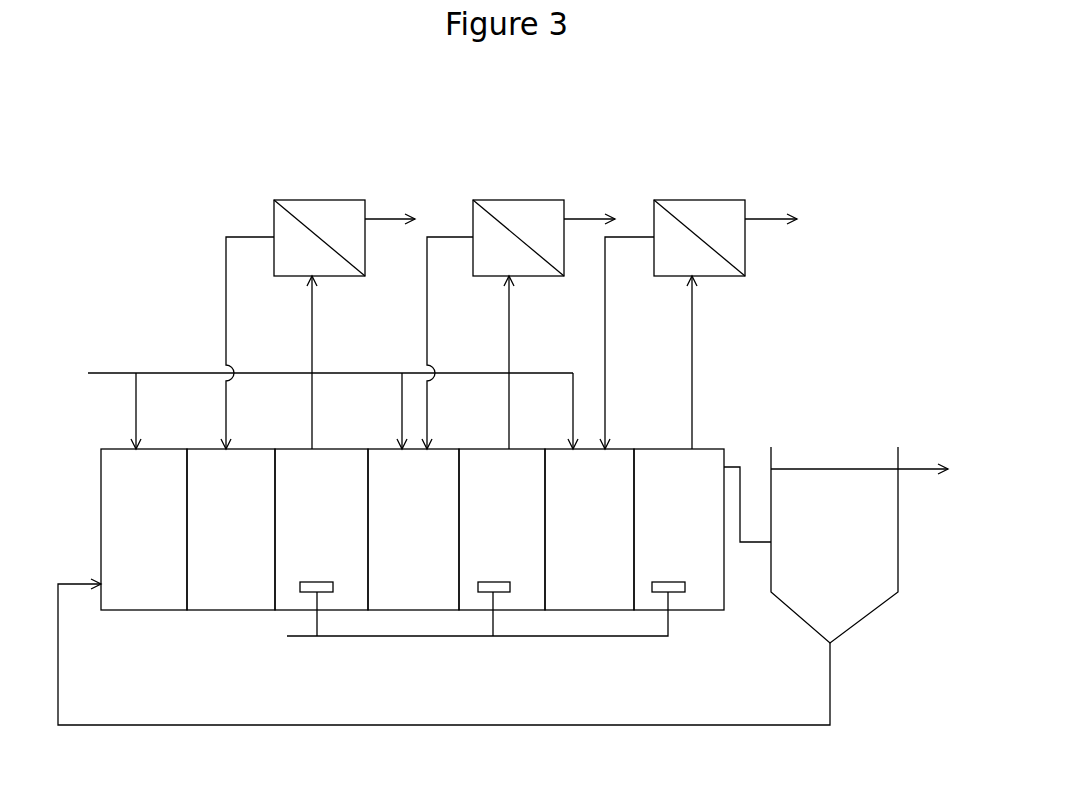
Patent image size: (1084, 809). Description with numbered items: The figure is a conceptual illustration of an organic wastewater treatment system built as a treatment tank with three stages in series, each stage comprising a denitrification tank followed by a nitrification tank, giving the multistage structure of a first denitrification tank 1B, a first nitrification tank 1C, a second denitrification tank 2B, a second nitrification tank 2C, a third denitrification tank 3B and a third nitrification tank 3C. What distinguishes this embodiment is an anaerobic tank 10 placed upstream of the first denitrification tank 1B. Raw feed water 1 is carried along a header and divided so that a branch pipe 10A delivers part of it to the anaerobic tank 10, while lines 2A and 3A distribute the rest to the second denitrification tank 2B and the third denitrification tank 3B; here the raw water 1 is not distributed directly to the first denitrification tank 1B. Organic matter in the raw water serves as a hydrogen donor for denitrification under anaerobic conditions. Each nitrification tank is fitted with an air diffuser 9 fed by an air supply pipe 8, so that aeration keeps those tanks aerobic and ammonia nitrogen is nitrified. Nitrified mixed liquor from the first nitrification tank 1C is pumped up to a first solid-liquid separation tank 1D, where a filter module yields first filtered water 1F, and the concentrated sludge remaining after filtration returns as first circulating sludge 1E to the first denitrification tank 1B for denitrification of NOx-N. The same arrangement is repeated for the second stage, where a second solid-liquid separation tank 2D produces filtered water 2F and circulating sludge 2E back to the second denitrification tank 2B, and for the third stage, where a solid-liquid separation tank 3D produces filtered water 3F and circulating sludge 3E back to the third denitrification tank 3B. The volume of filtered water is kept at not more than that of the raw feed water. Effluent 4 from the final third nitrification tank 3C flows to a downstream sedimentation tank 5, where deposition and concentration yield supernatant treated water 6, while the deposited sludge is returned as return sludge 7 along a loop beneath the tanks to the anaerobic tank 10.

The raw feed water 1 is at (109, 372).
The anaerobic tank 10 is at (140, 610).
The branch pipe 10A is at (137, 418).
The first denitrification tank 1B is at (212, 610).
The first nitrification tank 1C is at (340, 610).
The first solid-liquid separation tank 1D is at (309, 200).
The first circulating sludge 1E is at (226, 279).
The first filtered water 1F is at (385, 219).
The raw water line 2A is at (401, 418).
The second denitrification tank 2B is at (413, 610).
The second nitrification tank 2C is at (515, 610).
The second solid-liquid separation tank 2D is at (511, 200).
The circulating sludge 2E is at (427, 319).
The filtered water 2F is at (585, 219).
The raw water line 3A is at (572, 418).
The third denitrification tank 3B is at (582, 610).
The third nitrification tank 3C is at (693, 610).
The solid-liquid separation tank 3D is at (694, 200).
The circulating sludge 3E is at (605, 319).
The filtered water 3F is at (768, 219).
The effluent 4 is at (733, 466).
The sedimentation tank 5 is at (898, 563).
The treated water 6 is at (918, 469).
The return sludge 7 is at (733, 725).
The air supply pipe 8 is at (466, 623).
The air diffuser 9 is at (322, 582).